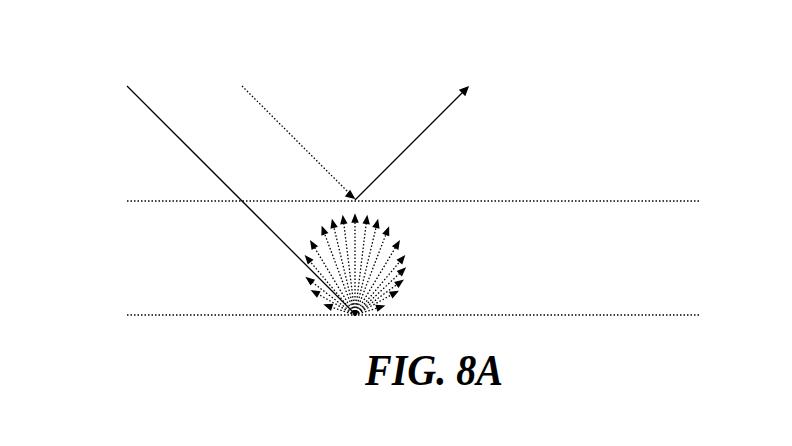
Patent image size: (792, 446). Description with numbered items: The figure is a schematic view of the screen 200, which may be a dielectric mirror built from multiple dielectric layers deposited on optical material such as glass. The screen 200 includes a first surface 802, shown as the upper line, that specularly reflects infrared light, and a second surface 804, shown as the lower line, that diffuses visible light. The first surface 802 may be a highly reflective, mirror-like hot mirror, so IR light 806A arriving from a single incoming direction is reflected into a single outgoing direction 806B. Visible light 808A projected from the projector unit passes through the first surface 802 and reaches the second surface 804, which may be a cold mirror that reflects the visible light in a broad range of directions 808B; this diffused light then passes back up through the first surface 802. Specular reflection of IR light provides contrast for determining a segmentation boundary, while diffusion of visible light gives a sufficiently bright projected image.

The screen 200 is at (688, 143).
The first surface 802 is at (665, 202).
The second surface 804 is at (665, 316).
The IR light 806A is at (275, 119).
The single outgoing direction 806B is at (432, 125).
The visible light 808A is at (177, 140).
The broad range of directions 808B is at (424, 238).